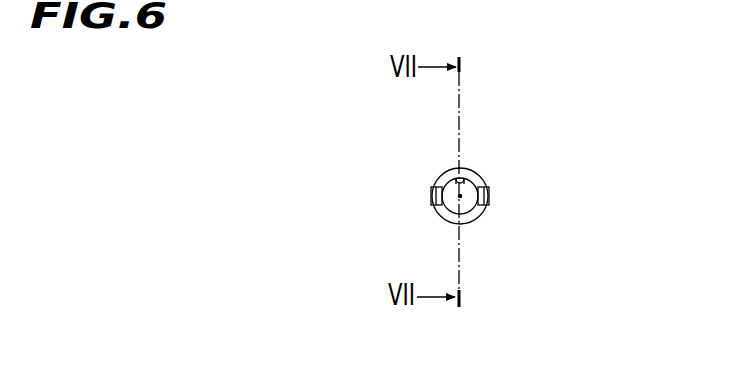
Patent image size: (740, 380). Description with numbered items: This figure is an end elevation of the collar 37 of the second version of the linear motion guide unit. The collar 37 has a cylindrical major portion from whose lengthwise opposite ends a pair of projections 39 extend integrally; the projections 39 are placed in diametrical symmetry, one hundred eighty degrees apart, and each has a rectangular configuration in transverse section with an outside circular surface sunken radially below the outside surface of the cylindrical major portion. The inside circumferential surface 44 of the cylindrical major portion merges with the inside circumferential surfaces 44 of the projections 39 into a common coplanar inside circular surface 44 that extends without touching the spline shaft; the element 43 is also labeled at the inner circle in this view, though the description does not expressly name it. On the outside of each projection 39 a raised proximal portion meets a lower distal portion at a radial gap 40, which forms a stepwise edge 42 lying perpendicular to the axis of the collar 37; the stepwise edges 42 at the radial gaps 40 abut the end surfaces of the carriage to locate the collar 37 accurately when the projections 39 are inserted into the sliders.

The collar 37 is at (464, 162).
The projections 39 is at (436, 180).
The radial gap 40 is at (431, 192).
The stepwise edge 42 is at (431, 202).
The notch edge 43 is at (457, 180).
The inside circumferential surface 44 is at (465, 180).